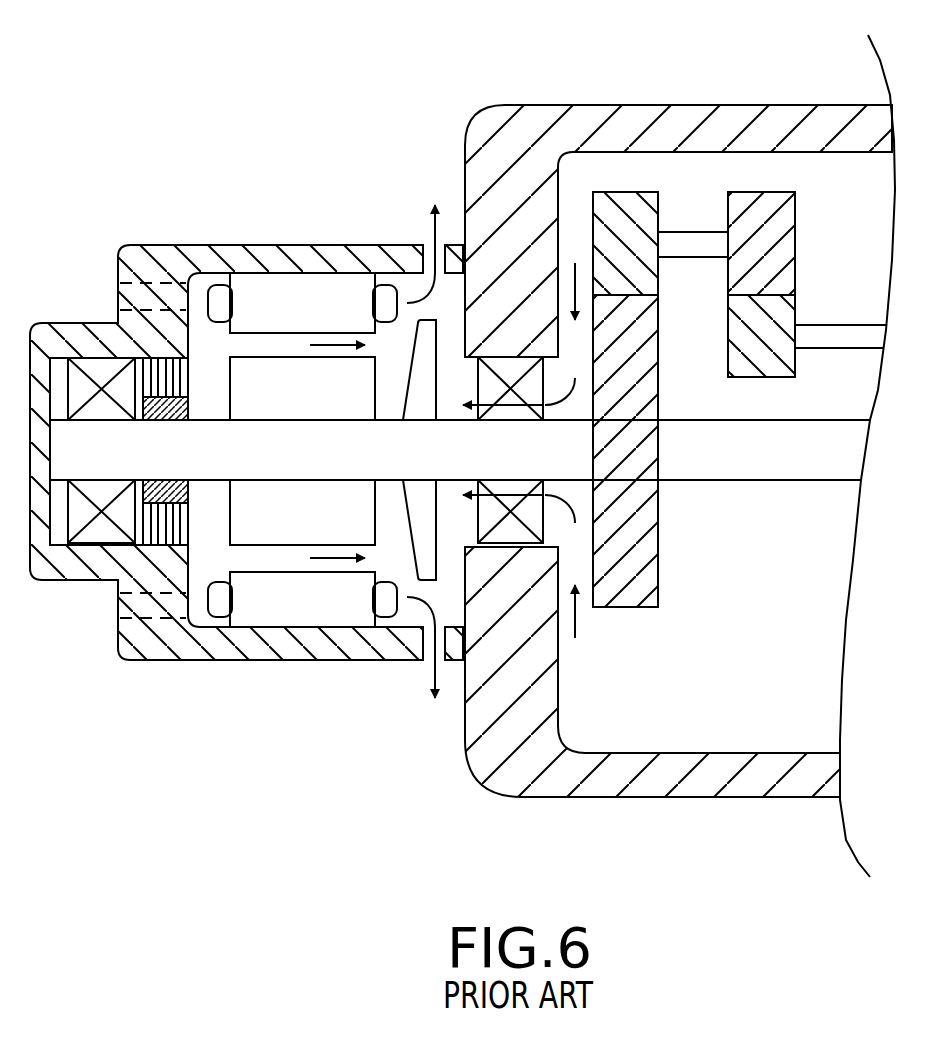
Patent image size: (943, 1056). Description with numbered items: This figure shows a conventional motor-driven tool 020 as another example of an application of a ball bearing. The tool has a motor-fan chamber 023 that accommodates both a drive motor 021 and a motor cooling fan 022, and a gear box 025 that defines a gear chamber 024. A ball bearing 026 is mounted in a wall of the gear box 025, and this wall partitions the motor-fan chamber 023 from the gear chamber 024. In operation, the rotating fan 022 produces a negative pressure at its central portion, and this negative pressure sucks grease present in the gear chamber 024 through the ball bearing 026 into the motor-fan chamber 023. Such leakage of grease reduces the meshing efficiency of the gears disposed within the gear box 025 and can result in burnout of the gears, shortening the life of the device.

The motor-driven tool 020 is at (312, 142).
The drive motor 021 is at (282, 600).
The motor cooling fan 022 is at (408, 562).
The motor-fan chamber 023 is at (205, 340).
The gear chamber 024 is at (691, 195).
The gear box 025 is at (652, 778).
The ball bearing 026 is at (528, 518).